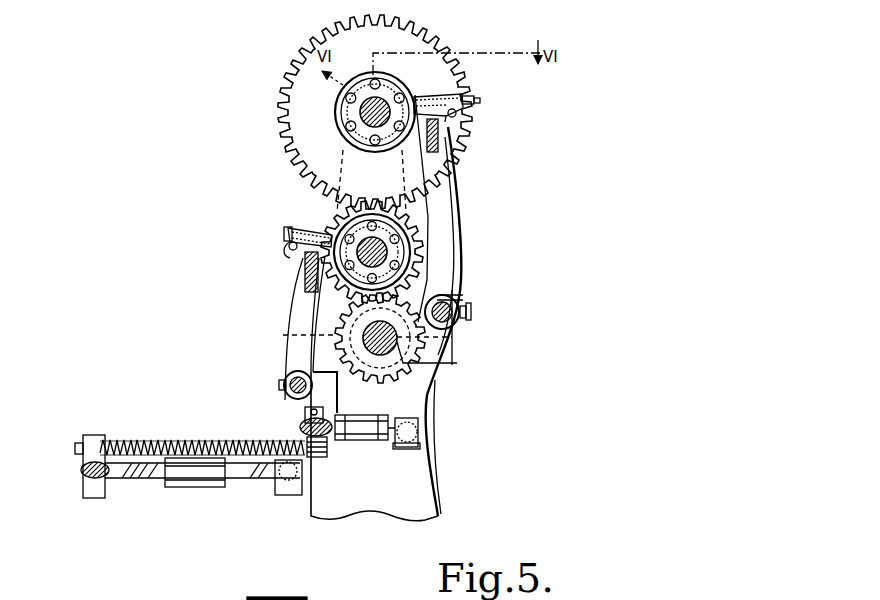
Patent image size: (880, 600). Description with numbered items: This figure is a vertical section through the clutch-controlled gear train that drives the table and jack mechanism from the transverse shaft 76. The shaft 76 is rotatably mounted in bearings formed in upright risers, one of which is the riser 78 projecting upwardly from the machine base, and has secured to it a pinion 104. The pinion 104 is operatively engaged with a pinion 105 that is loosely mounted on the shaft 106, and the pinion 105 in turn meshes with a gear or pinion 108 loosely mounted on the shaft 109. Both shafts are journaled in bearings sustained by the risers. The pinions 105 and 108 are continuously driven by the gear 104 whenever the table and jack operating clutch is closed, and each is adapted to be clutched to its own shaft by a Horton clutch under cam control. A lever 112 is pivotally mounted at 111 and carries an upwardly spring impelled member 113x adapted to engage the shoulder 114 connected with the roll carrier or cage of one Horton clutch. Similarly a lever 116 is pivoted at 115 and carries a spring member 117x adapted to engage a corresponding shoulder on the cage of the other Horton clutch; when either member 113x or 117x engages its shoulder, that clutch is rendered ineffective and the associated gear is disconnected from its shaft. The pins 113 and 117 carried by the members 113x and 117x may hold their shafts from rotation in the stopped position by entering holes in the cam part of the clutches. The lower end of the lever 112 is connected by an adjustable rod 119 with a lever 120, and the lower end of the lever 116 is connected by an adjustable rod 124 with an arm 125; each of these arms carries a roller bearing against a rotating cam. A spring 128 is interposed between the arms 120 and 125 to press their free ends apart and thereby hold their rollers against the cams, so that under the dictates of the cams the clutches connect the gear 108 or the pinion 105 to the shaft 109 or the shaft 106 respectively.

The transverse shaft 76 is at (388, 342).
The riser 78 is at (431, 473).
The pinion 104 is at (394, 387).
The pinion 105 is at (414, 232).
The shaft 106 is at (388, 258).
The gear or pinion 108 is at (463, 155).
The shaft 109 is at (356, 116).
The pivot 111 is at (290, 381).
The lever 112 is at (300, 313).
The pin 113 is at (288, 231).
The spring impelled member 113x is at (288, 253).
The shoulder 114 is at (335, 232).
The pivot 115 is at (453, 306).
The lever 116 is at (455, 277).
The pin 117 is at (465, 100).
The spring member 117x is at (455, 118).
The adjustable rod 119 is at (252, 480).
The lever 120 is at (82, 469).
The adjustable rod 124 is at (377, 432).
The arm 125 is at (302, 423).
The spring 128 is at (227, 445).